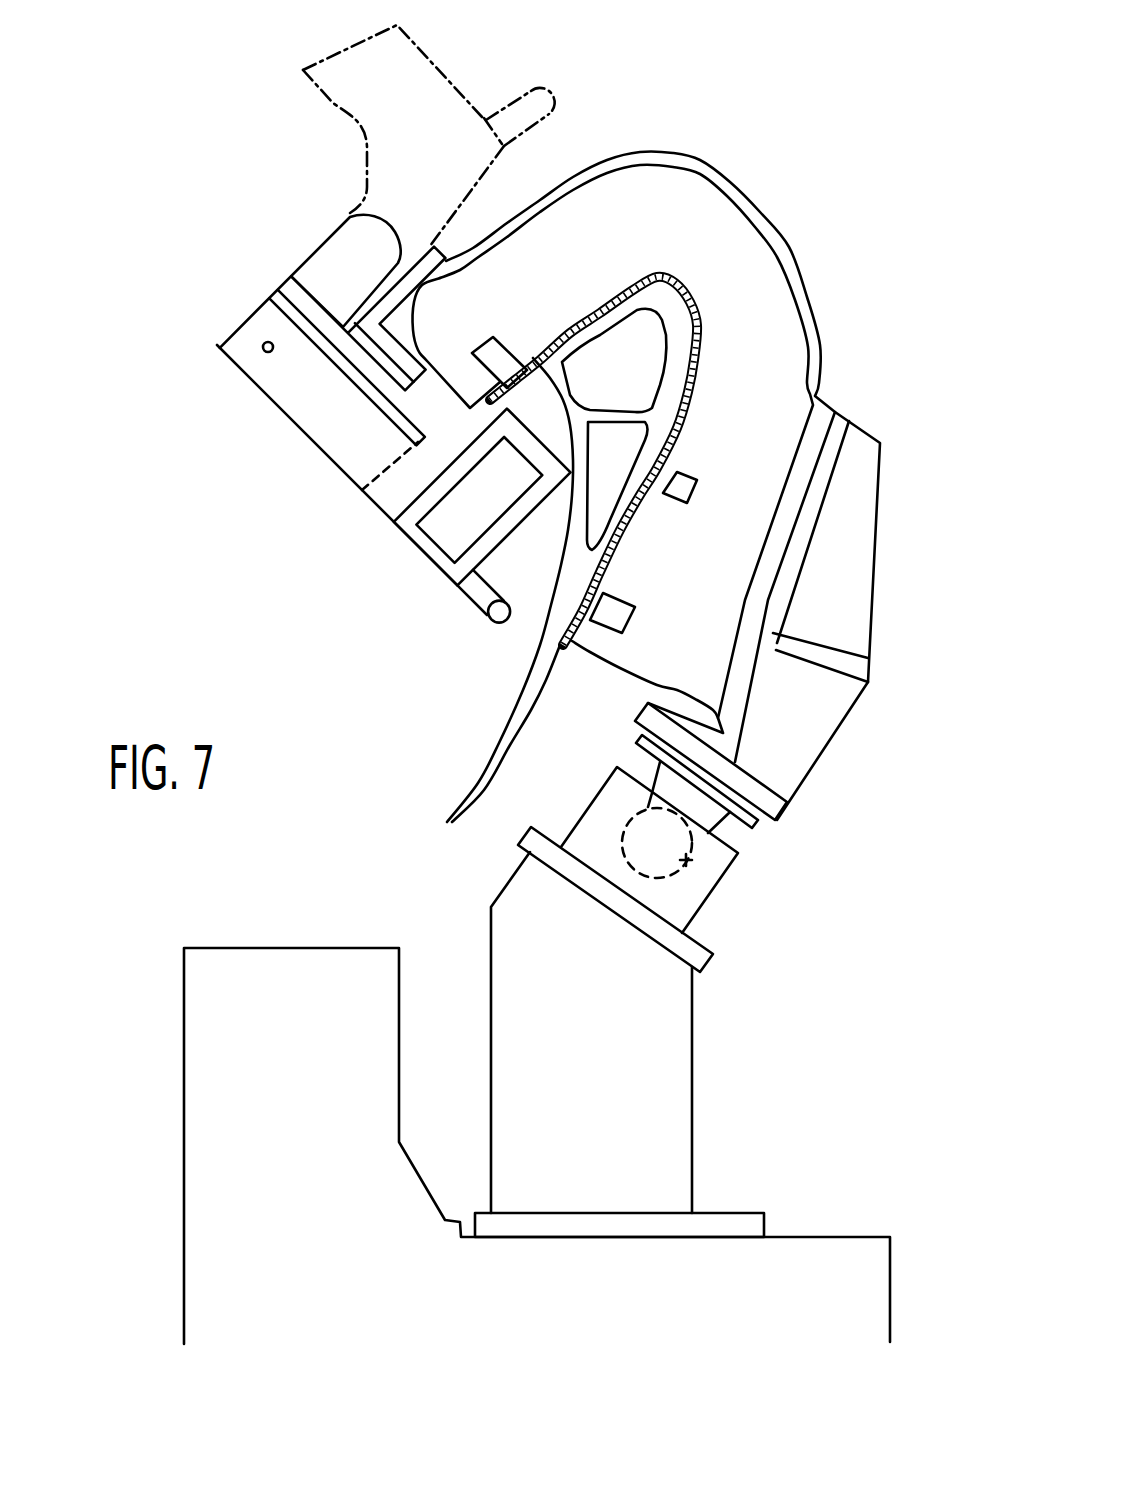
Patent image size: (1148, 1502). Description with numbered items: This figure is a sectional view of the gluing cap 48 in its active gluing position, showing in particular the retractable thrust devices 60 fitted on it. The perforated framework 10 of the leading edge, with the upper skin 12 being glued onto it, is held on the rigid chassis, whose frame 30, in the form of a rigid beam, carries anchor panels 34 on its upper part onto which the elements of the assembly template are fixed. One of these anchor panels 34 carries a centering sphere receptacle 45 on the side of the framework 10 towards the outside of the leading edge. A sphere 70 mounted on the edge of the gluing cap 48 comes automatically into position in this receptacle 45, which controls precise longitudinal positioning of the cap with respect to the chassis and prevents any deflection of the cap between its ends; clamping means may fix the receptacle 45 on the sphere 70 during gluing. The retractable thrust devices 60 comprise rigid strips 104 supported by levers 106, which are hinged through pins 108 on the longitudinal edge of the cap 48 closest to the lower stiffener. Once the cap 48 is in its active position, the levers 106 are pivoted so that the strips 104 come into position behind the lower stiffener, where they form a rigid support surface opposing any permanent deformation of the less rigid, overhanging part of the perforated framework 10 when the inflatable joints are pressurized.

The perforated framework 10 is at (496, 690).
The upper skin 12 is at (660, 273).
The frame 30 is at (809, 1259).
The anchor panels 34 is at (686, 1064).
The centering sphere receptacle 45 is at (684, 911).
The gluing cap 48 is at (810, 257).
The retractable thrust devices 60 is at (226, 330).
The sphere 70 is at (672, 860).
The rigid strips 104 is at (432, 530).
The levers 106 is at (315, 418).
The pins 108 is at (264, 341).